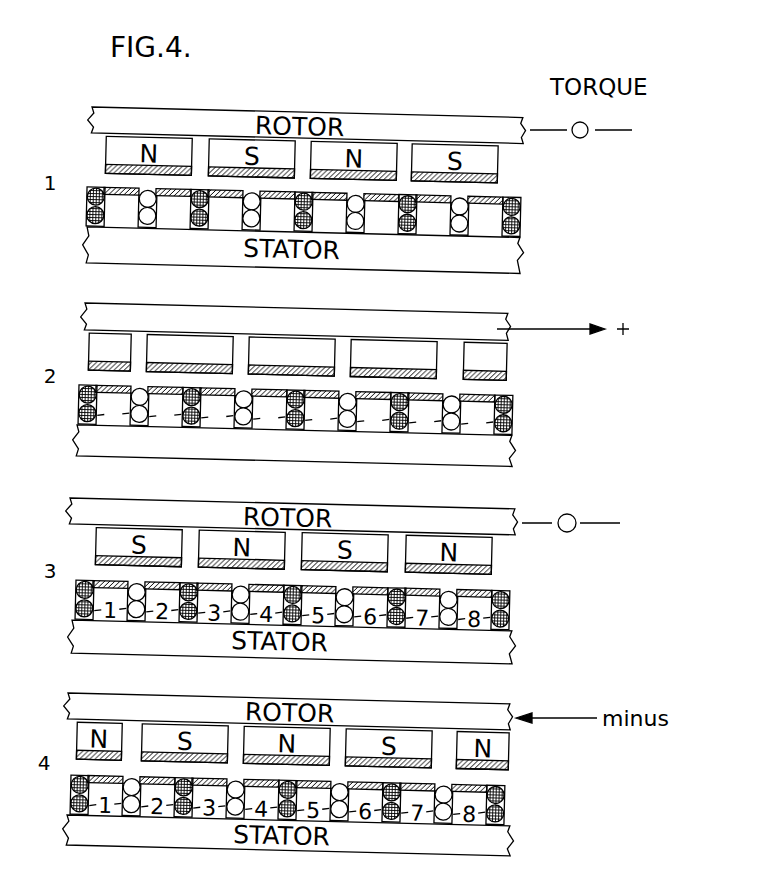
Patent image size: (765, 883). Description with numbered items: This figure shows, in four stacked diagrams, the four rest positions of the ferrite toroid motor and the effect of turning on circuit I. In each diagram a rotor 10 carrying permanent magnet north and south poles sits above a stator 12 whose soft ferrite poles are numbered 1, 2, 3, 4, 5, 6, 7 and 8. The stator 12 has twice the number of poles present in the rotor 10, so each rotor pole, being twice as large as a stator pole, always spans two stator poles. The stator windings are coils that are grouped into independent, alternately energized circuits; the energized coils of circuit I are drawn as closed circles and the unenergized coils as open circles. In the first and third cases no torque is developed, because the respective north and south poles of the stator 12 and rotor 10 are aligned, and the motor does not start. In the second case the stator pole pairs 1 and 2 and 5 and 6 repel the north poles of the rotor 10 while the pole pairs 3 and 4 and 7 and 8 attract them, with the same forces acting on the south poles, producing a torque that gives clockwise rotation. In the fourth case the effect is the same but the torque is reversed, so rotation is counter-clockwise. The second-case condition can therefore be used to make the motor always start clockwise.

The rotor 10 is at (483, 322).
The stator 12 is at (498, 447).
The stator pole 1 is at (140, 214).
The stator pole 2 is at (192, 214).
The stator pole 3 is at (244, 214).
The stator pole 4 is at (296, 214).
The stator pole 5 is at (348, 214).
The stator pole 6 is at (400, 214).
The stator pole 7 is at (452, 214).
The stator pole 8 is at (504, 214).